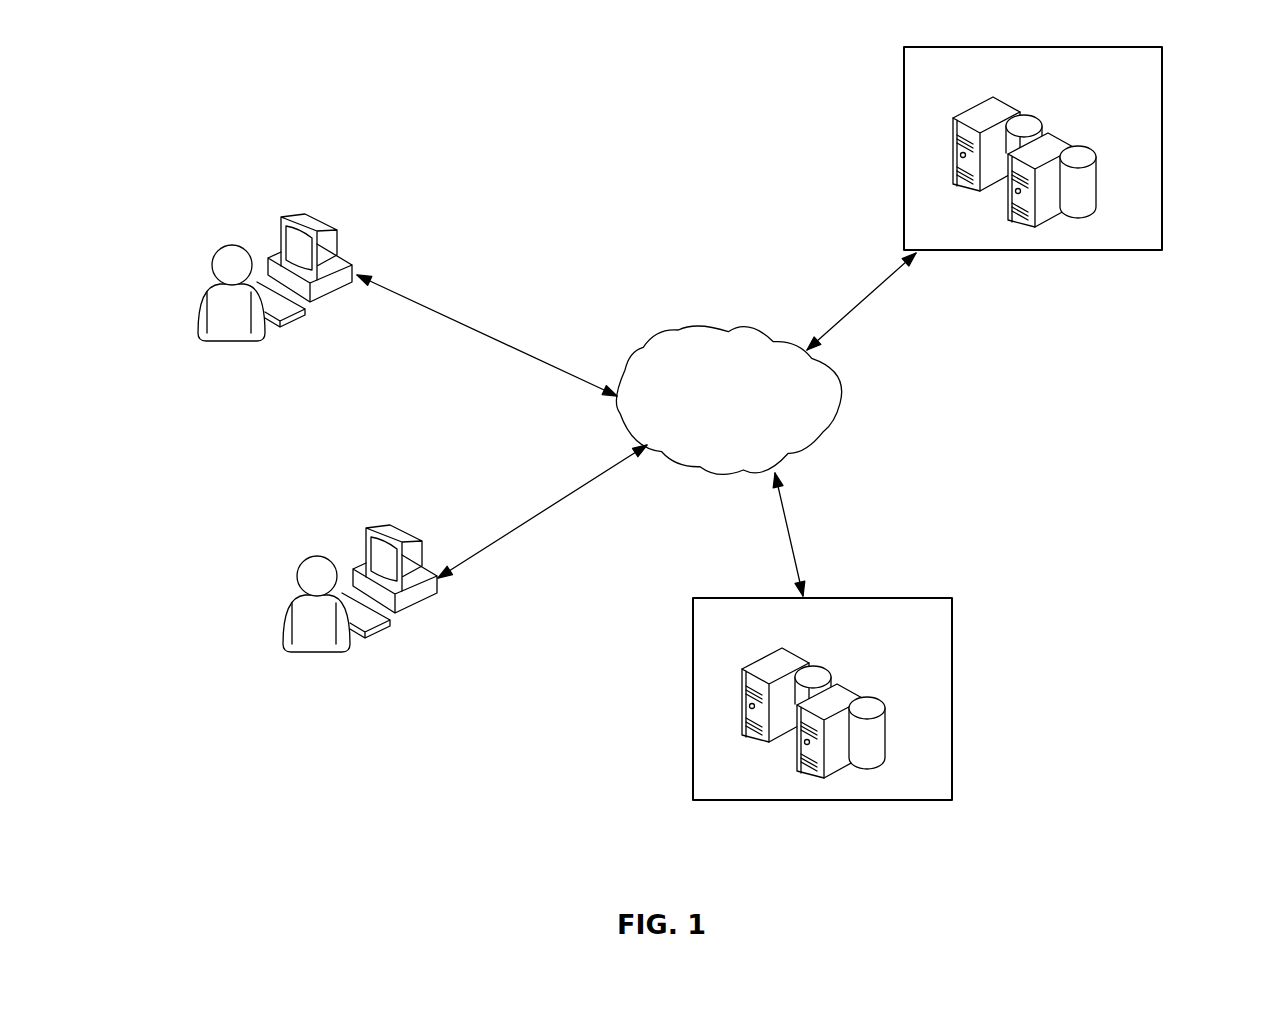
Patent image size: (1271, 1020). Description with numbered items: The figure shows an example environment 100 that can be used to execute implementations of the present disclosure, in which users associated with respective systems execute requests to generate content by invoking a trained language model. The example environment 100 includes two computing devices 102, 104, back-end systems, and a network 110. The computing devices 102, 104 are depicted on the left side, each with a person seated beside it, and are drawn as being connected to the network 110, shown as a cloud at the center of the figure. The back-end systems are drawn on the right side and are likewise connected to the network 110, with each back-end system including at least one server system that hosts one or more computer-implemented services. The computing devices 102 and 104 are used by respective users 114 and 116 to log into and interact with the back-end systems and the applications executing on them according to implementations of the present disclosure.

The example environment 100 is at (662, 52).
The computing device 102 is at (293, 210).
The computing device 104 is at (378, 522).
The network 110 is at (762, 328).
The user 114 is at (248, 341).
The user 116 is at (330, 653).